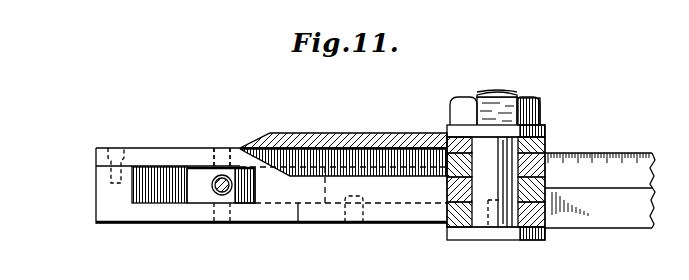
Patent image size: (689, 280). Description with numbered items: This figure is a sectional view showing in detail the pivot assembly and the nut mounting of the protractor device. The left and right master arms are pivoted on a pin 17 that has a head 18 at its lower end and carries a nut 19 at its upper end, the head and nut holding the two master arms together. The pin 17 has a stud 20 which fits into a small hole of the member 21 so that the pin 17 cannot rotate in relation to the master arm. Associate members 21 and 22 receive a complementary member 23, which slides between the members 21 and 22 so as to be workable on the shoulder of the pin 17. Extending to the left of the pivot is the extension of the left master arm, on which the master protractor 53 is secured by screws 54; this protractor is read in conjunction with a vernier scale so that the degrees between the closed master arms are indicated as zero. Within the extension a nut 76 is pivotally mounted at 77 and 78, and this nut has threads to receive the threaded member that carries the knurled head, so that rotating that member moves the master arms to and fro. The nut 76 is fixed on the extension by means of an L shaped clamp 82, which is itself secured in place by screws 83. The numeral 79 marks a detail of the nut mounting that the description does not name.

The pin 17 is at (497, 89).
The head 18 is at (466, 232).
The nut 19 is at (530, 114).
The stud 20 is at (500, 233).
The member 21 is at (455, 215).
The member 22 is at (547, 157).
The complementary member 23 is at (450, 185).
The master protractor 53 is at (305, 133).
The screws 54 is at (407, 134).
The nut 76 is at (205, 168).
The pivot mounting 77 is at (228, 152).
The pivot mounting 78 is at (227, 212).
The rivet 79 is at (216, 192).
The L shaped clamp 82 is at (96, 206).
The screws 83 is at (113, 148).